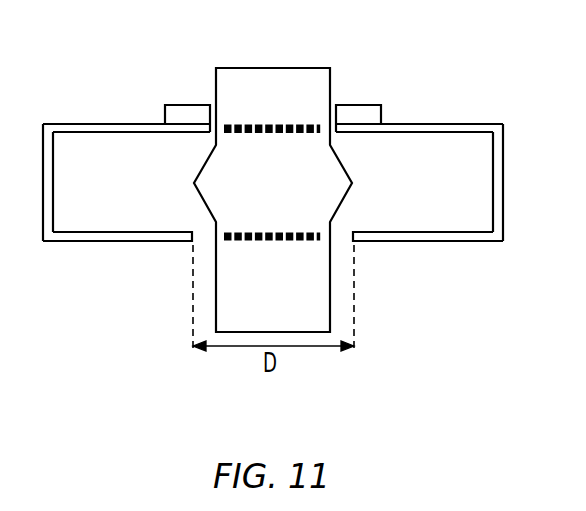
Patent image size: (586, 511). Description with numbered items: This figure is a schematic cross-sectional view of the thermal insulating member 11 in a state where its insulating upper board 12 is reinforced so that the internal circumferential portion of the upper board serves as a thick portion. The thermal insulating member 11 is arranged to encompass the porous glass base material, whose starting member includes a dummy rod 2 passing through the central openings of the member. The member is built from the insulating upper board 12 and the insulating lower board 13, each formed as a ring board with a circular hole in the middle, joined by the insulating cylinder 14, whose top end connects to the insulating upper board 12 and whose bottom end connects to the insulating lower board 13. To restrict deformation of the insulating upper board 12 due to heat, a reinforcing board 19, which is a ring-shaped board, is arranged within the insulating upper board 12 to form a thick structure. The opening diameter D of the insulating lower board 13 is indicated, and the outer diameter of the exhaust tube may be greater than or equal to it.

The dummy rod 2 is at (333, 82).
The thermal insulating member 11 is at (291, 157).
The insulating upper board 12 is at (452, 124).
The insulating lower board 13 is at (453, 241).
The insulating cylinder 14 is at (503, 180).
The reinforcing board 19 is at (185, 105).